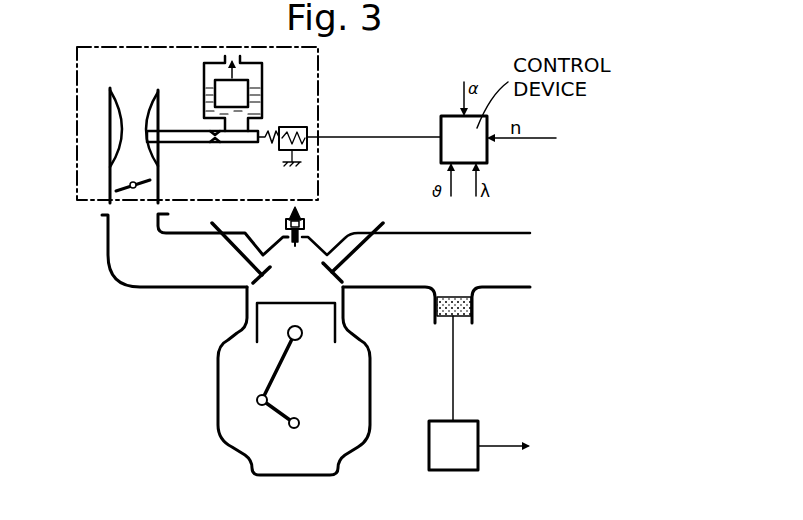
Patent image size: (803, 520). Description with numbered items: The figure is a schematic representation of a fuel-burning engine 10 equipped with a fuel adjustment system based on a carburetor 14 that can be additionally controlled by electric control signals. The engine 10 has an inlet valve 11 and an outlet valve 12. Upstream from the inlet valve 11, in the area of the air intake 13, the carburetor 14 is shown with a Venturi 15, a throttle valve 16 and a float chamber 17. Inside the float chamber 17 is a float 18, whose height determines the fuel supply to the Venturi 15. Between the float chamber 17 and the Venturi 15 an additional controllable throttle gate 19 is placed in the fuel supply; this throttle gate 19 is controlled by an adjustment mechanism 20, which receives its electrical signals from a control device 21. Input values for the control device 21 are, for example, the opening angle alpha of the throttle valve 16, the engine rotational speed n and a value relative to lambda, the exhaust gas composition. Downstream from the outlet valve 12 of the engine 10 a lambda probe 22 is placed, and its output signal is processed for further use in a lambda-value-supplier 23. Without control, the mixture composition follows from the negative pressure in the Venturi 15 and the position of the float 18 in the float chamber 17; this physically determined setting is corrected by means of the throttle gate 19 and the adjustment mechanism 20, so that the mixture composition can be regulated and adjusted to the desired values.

The fuel-burning engine 10 is at (233, 429).
The inlet valve 11 is at (251, 270).
The outlet valve 12 is at (346, 262).
The air intake 13 is at (118, 281).
The carburetor 14 is at (77, 158).
The Venturi 15 is at (146, 133).
The throttle valve 16 is at (154, 182).
The float chamber 17 is at (206, 72).
The float 18 is at (246, 89).
The throttle gate 19 is at (224, 138).
The adjustment mechanism 20 is at (291, 125).
The control device 21 is at (452, 122).
The lambda probe 22 is at (464, 305).
The lambda-value-supplier 23 is at (470, 427).